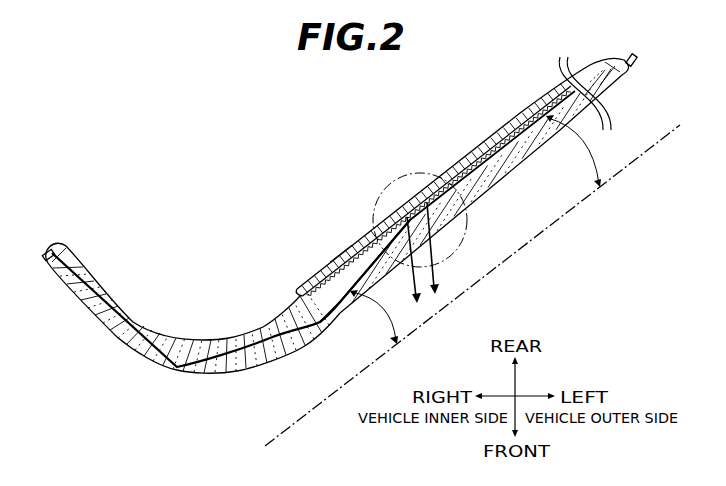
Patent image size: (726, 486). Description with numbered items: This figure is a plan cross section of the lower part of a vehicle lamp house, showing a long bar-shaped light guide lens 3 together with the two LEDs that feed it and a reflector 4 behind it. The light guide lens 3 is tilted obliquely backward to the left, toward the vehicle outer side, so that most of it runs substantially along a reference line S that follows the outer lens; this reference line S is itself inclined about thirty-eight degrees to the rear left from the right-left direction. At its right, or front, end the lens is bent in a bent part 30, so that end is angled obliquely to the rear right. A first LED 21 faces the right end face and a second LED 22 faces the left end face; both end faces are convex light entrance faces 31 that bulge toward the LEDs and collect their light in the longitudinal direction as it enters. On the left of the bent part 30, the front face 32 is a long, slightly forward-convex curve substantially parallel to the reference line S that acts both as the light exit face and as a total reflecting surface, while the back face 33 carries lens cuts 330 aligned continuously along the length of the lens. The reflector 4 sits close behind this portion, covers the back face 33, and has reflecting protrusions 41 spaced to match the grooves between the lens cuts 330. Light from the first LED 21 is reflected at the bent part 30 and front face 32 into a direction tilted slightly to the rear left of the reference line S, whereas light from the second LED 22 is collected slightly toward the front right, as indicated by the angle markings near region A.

The light guide lens 3 is at (257, 325).
The reflector 4 is at (530, 106).
The first LED 21 is at (50, 247).
The second LED 22 is at (633, 54).
The bent part 30 is at (200, 373).
The light entrance faces 31 is at (53, 262).
The front face 32 is at (506, 178).
The back face 33 is at (320, 281).
The reflecting protrusions 41 is at (351, 242).
The lens cuts 330 is at (505, 124).
The bend region A is at (383, 190).
The reference line S is at (627, 165).